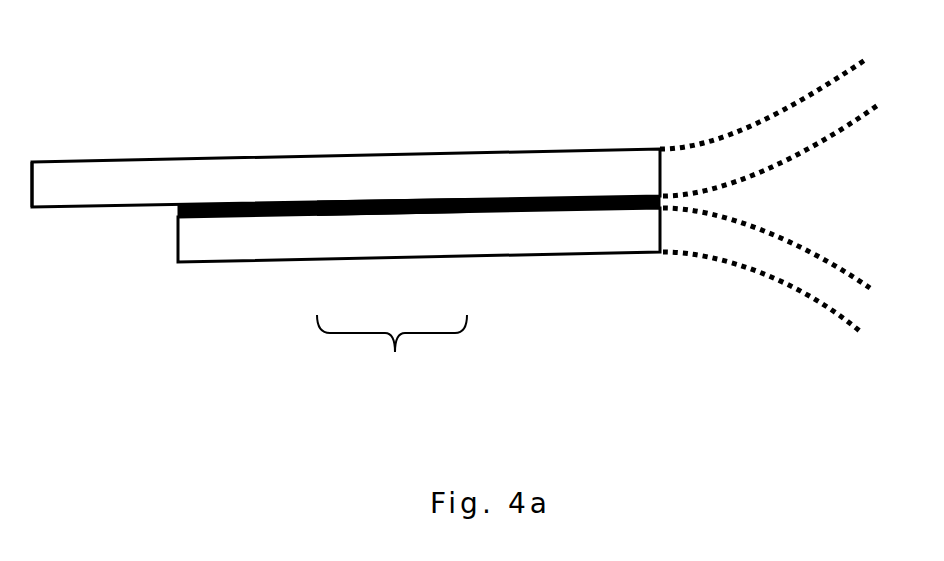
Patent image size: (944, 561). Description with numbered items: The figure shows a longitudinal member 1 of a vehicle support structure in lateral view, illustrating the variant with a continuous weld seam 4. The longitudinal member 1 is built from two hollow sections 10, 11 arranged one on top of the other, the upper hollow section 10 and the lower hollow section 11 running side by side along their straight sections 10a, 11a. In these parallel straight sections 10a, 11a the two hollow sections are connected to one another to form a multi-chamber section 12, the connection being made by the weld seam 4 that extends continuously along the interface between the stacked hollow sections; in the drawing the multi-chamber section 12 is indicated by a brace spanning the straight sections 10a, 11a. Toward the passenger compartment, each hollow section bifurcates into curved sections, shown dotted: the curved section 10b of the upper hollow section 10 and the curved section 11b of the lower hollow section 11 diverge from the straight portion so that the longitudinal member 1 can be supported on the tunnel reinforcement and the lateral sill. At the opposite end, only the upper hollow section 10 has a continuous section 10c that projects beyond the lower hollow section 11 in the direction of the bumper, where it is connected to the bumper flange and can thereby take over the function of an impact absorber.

The longitudinal member 1 is at (215, 102).
The weld seam 4 is at (175, 215).
The hollow section 10 is at (267, 158).
The straight section 10a is at (367, 175).
The curved section 10b is at (757, 145).
The continuous section 10c is at (70, 188).
The hollow section 11 is at (535, 257).
The straight section 11a is at (417, 230).
The curved section 11b is at (722, 260).
The multi-chamber section 12 is at (392, 349).